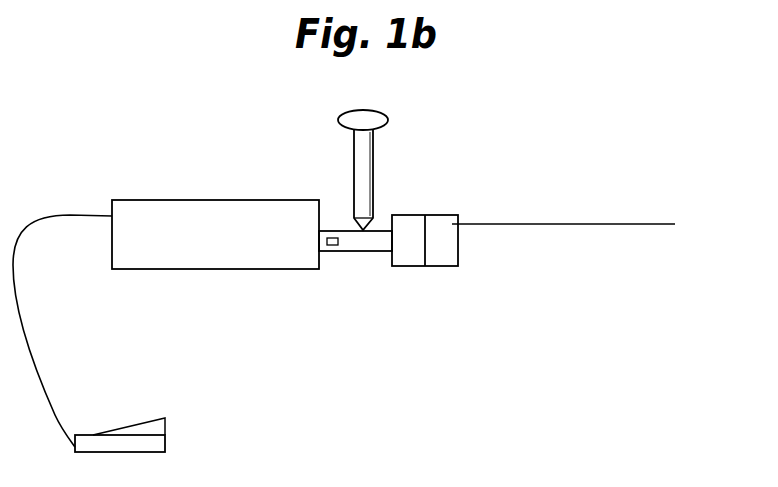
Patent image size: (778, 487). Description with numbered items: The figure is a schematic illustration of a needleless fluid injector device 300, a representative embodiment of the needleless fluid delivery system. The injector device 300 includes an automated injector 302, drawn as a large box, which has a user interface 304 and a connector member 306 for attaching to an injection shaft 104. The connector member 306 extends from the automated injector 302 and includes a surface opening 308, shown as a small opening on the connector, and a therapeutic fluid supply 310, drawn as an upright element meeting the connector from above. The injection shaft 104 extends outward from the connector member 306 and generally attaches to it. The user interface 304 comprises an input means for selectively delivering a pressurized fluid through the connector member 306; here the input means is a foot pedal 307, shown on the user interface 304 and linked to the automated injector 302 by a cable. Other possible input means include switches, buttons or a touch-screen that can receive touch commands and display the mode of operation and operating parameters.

The injector device 300 is at (440, 117).
The automated injector 302 is at (228, 257).
The user interface 304 is at (150, 452).
The connector member 306 is at (358, 252).
The foot pedal 307 is at (148, 420).
The surface opening 308 is at (333, 237).
The therapeutic fluid supply 310 is at (357, 153).
The injection shaft 104 is at (658, 223).